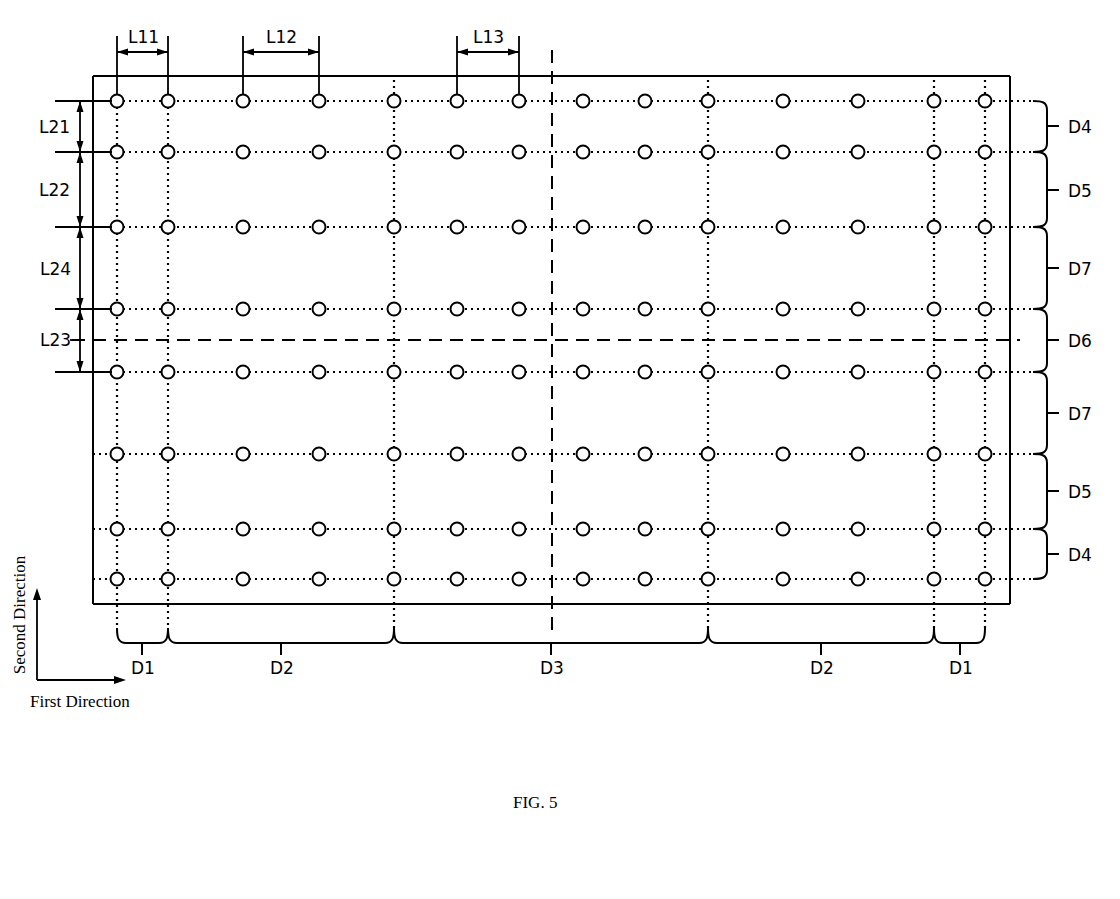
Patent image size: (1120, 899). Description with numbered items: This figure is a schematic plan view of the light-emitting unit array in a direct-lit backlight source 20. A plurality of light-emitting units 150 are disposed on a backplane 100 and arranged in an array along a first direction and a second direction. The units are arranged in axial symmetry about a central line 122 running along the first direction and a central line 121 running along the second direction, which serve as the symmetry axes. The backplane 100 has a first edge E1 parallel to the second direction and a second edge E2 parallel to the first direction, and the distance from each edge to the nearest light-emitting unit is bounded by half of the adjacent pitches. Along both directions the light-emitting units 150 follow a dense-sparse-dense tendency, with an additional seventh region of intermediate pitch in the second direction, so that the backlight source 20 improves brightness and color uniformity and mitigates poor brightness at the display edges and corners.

The backplane 100 is at (668, 87).
The light-emitting units 150 is at (785, 95).
The central line along the second direction 121 is at (553, 62).
The central line along the first direction 122 is at (1020, 340).
The direct-lit backlight source 20 is at (560, 726).
The first edge E1 is at (93, 520).
The second edge E2 is at (902, 76).